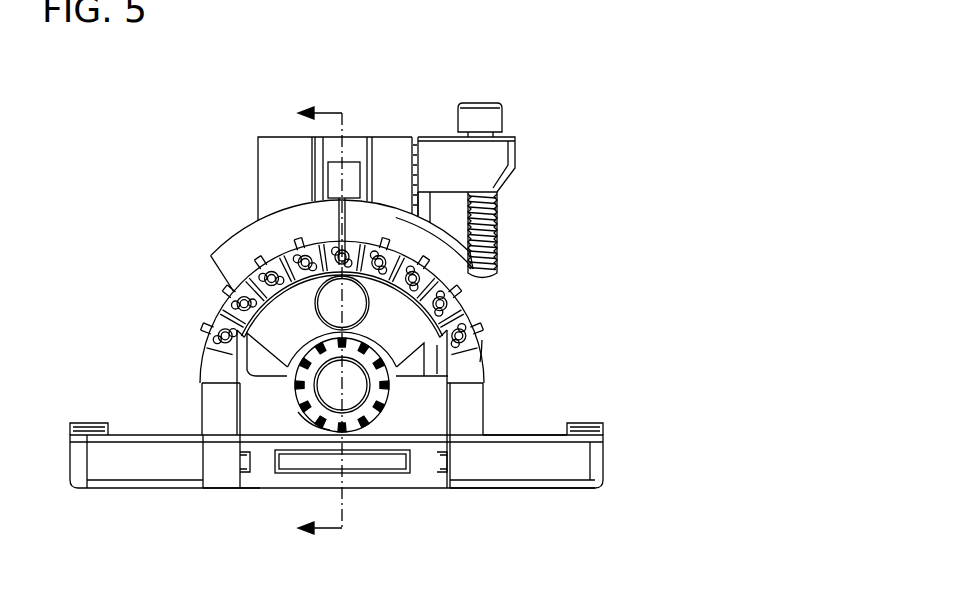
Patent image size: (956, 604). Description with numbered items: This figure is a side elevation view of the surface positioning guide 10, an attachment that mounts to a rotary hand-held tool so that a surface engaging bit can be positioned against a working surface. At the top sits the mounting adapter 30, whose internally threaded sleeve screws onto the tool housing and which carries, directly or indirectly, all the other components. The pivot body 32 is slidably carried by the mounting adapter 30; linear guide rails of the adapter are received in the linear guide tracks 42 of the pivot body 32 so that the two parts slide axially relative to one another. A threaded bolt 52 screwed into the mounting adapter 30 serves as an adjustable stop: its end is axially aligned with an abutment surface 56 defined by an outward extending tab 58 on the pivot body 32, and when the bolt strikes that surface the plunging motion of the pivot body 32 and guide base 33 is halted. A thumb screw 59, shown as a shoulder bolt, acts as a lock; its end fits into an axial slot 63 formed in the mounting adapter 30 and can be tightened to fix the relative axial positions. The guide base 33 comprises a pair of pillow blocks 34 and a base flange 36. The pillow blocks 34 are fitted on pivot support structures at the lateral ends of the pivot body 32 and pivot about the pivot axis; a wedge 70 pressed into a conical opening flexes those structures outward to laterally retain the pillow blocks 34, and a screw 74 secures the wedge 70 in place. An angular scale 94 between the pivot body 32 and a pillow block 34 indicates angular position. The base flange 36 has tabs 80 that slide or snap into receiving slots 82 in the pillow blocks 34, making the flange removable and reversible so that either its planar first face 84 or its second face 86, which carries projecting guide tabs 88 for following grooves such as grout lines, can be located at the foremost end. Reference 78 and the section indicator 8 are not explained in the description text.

The surface positioning guide 10 is at (600, 163).
The mounting adapter 30 is at (258, 134).
The pivot body 32 is at (226, 257).
The guide base 33 is at (231, 488).
The pillow blocks 34 is at (298, 412).
The base flange 36 is at (510, 467).
The linear guide tracks 42 is at (354, 146).
The threaded bolt 52 is at (498, 115).
The abutment surface 56 is at (483, 346).
The outward extending tab 58 is at (481, 351).
The thumb screw 59 is at (328, 237).
The axial slot 63 is at (337, 178).
The wedge 70 is at (285, 372).
The screw 74 is at (328, 388).
The base end portions 78 is at (604, 460).
The tabs 80 is at (360, 462).
The receiving slots 82 is at (413, 463).
The first face 84 is at (582, 492).
The second face 86 is at (537, 433).
The guide tabs 88 is at (580, 430).
The angular scale 94 is at (226, 306).
The section line 8- 8 is at (311, 322).